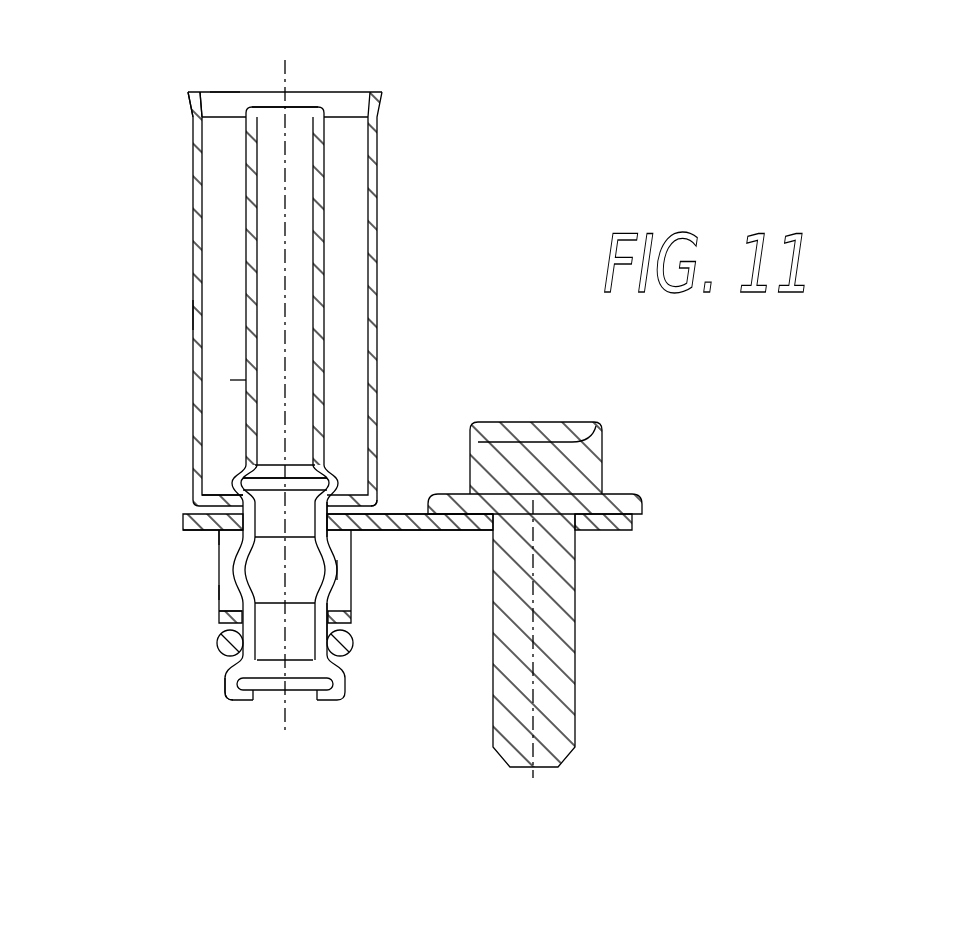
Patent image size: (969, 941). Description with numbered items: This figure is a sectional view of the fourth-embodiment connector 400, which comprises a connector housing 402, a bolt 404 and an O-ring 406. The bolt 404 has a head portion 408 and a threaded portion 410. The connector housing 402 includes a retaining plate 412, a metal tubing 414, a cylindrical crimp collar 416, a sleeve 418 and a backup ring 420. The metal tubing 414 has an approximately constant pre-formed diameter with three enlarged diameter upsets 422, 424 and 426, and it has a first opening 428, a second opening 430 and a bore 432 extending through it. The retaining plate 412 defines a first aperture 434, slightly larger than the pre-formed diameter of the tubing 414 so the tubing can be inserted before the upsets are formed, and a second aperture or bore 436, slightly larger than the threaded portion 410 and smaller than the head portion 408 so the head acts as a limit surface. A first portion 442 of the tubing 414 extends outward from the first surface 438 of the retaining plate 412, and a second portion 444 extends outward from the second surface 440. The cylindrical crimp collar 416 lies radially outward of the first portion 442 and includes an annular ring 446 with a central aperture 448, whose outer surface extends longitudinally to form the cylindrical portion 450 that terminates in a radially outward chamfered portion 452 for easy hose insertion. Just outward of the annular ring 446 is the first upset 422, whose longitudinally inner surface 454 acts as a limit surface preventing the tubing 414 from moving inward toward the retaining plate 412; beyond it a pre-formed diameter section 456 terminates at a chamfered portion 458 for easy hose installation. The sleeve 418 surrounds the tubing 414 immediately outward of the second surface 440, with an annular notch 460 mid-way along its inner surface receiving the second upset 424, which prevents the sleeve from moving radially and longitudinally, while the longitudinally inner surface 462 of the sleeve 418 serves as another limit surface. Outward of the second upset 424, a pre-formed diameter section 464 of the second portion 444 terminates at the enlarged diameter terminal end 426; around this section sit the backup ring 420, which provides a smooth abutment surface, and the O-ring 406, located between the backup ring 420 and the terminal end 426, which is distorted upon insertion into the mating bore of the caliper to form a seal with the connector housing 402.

The connector 400 is at (448, 110).
The connector housing 402 is at (184, 518).
The bolt 404 is at (560, 591).
The O-ring 406 is at (216, 645).
The head portion 408 is at (603, 448).
The threaded portion 410 is at (576, 690).
The retaining plate 412 is at (193, 527).
The metal tubing 414 is at (326, 275).
The cylindrical crimp collar 416 is at (380, 200).
The sleeve 418 is at (219, 570).
The backup ring 420 is at (219, 618).
The first enlarged diameter upset 422 is at (362, 462).
The second enlarged diameter upset 424 is at (347, 608).
The enlarged diameter terminal end 426 is at (338, 688).
The first opening 428 is at (298, 102).
The second opening 430 is at (298, 700).
The bore 432 is at (300, 318).
The first aperture 434 is at (355, 532).
The second aperture or bore 436 is at (590, 532).
The first surface 438 is at (400, 512).
The second surface 440 is at (388, 531).
The first portion 442 is at (326, 377).
The second portion 444 is at (350, 633).
The annular ring 446 is at (203, 492).
The aperture 448 is at (232, 478).
The cylindrical portion 450 is at (193, 313).
The chamfered portion 452 is at (190, 110).
The longitudinally inner surface 454 is at (377, 485).
The pre-formed diameter section 456 is at (243, 385).
The chamfered portion 458 is at (225, 103).
The annular notch 460 is at (219, 593).
The longitudinally inner surface 462 is at (219, 545).
The pre-formed diameter section 464 is at (237, 660).